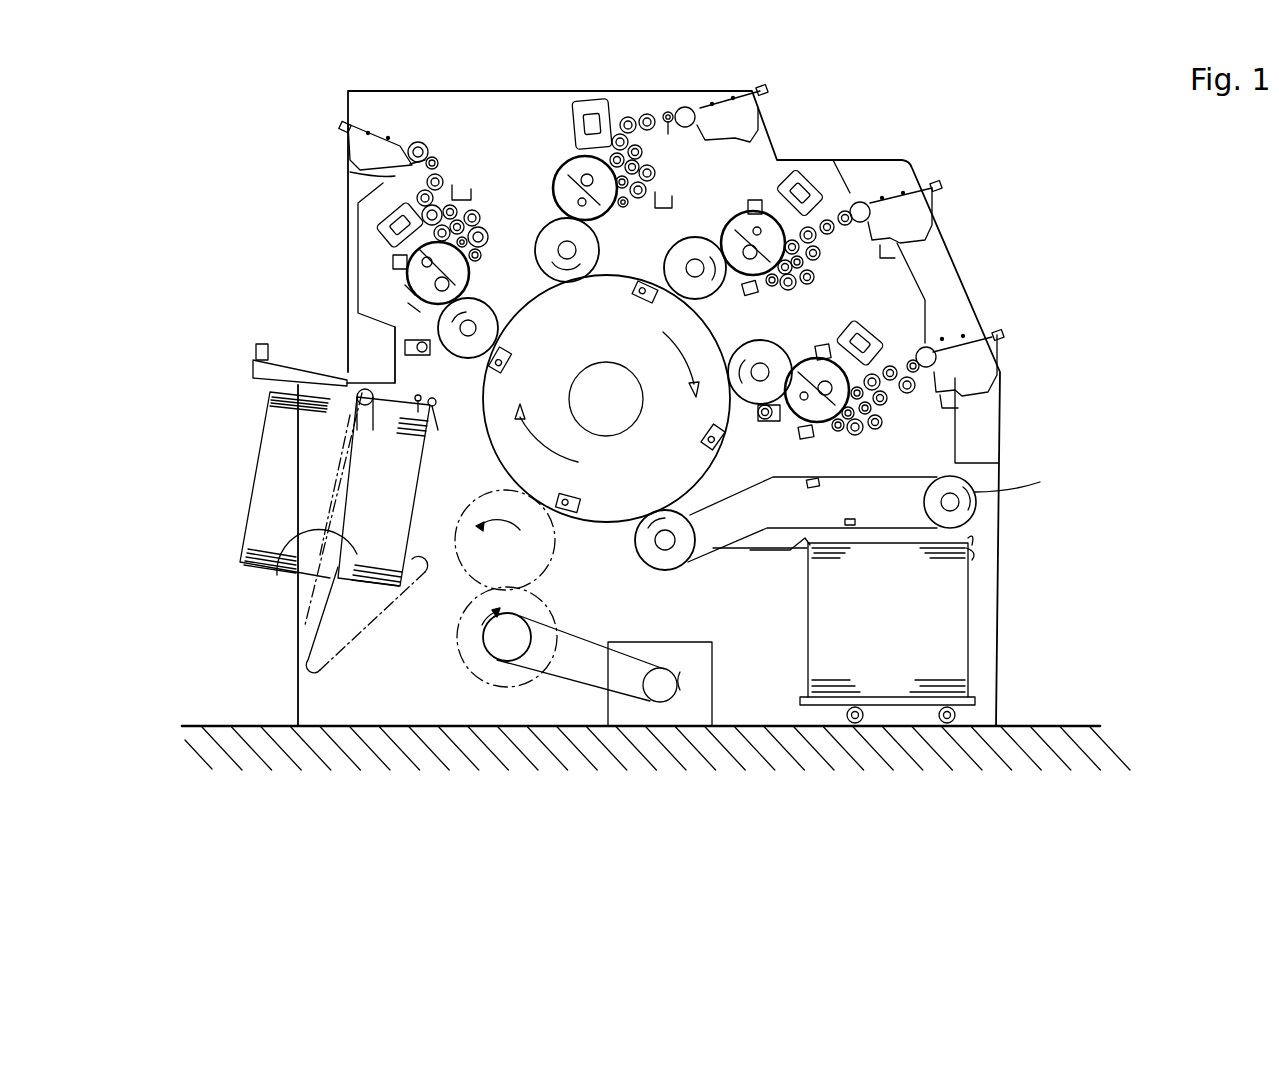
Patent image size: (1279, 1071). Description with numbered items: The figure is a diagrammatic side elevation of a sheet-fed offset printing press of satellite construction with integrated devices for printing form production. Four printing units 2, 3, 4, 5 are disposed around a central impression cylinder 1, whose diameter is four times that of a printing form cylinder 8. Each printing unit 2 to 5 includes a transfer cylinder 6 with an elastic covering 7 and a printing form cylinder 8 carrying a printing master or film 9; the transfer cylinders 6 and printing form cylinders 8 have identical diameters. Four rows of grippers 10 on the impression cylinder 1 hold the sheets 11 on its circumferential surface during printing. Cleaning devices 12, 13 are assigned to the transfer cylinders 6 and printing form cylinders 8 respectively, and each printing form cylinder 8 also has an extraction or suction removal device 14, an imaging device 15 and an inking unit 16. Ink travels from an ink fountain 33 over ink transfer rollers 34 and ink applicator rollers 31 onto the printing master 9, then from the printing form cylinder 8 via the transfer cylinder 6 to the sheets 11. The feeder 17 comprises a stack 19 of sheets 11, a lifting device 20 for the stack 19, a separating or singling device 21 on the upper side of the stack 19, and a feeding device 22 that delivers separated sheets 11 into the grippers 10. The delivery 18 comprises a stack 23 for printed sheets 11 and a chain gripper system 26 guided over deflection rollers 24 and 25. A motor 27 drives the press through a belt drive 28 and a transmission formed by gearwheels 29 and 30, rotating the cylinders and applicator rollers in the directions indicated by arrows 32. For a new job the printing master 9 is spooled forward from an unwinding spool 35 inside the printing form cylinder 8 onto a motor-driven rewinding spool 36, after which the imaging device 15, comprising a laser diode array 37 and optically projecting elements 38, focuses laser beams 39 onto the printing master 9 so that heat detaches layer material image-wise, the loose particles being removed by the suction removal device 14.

The impression cylinder 1 is at (512, 455).
The printing unit 2 is at (351, 208).
The printing unit 3 is at (650, 176).
The printing unit 4 is at (780, 215).
The printing unit 5 is at (942, 333).
The transfer cylinder 6 is at (485, 315).
The elastic covering 7 is at (462, 283).
The printing form cylinder 8 is at (435, 286).
The printing master or film 9 is at (495, 255).
The rows of grippers 10 is at (643, 295).
The sheets 11 is at (565, 292).
The cleaning device 12 is at (410, 356).
The cleaning device 13 is at (395, 333).
The extraction or suction removal device 14 is at (392, 262).
The imaging or image-setting device 15 is at (385, 225).
The inking unit 16 is at (474, 201).
The feeder 17 is at (290, 506).
The delivery 18 is at (887, 585).
The stack or pile 19 is at (265, 512).
The lifting device 20 is at (274, 572).
The separating or singling device 21 is at (250, 357).
The feeding device 22 is at (440, 410).
The stack or pile 23 is at (940, 645).
The deflection roller 24 is at (688, 565).
The deflection roller 25 is at (982, 490).
The chain gripper system 26 is at (812, 480).
The motor 27 is at (678, 715).
The belt drive 28 is at (569, 692).
The gearwheel 29 is at (468, 678).
The gearwheel 30 is at (468, 570).
The ink applicator roller 31 is at (395, 172).
The arrows 32 is at (606, 423).
The ink fountain or duct 33 is at (392, 132).
The ink transfer roller 34 is at (450, 185).
The unwinding spool 35 is at (412, 300).
The rewinding spool 36 is at (408, 280).
The laser diode array 37 is at (565, 150).
The optically projecting elements 38 is at (600, 120).
The laser beams 39 is at (770, 205).